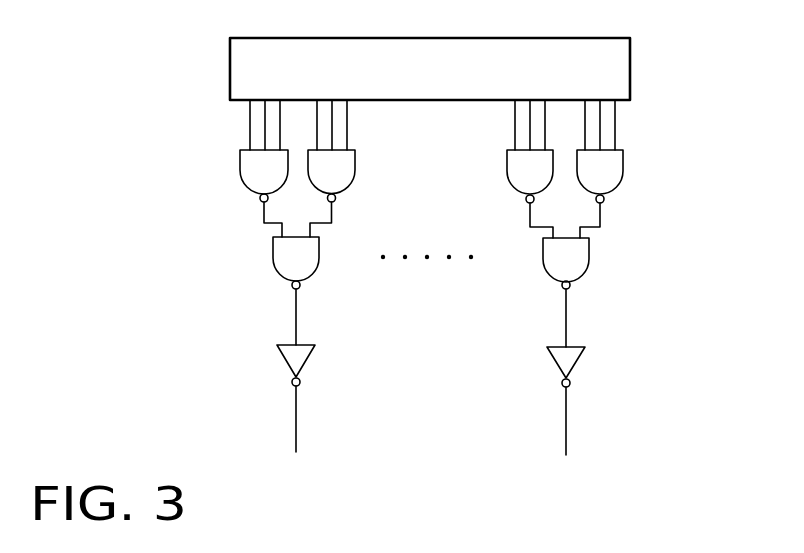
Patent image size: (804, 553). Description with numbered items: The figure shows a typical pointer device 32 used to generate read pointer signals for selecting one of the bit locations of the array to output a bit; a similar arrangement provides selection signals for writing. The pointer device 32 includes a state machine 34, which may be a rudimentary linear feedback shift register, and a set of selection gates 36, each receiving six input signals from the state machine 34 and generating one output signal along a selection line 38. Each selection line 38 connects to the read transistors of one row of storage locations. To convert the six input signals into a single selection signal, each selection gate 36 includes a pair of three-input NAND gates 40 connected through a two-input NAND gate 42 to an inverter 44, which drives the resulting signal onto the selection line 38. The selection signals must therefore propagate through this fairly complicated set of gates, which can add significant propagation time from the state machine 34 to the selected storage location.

The pointer device 32 is at (140, 118).
The state machine 34 is at (237, 43).
The selection gate 36 is at (298, 467).
The selection line 38 is at (297, 440).
The 3-input NAND gate 40 is at (242, 172).
The 2-input NAND gate 42 is at (273, 262).
The inverter 44 is at (278, 356).